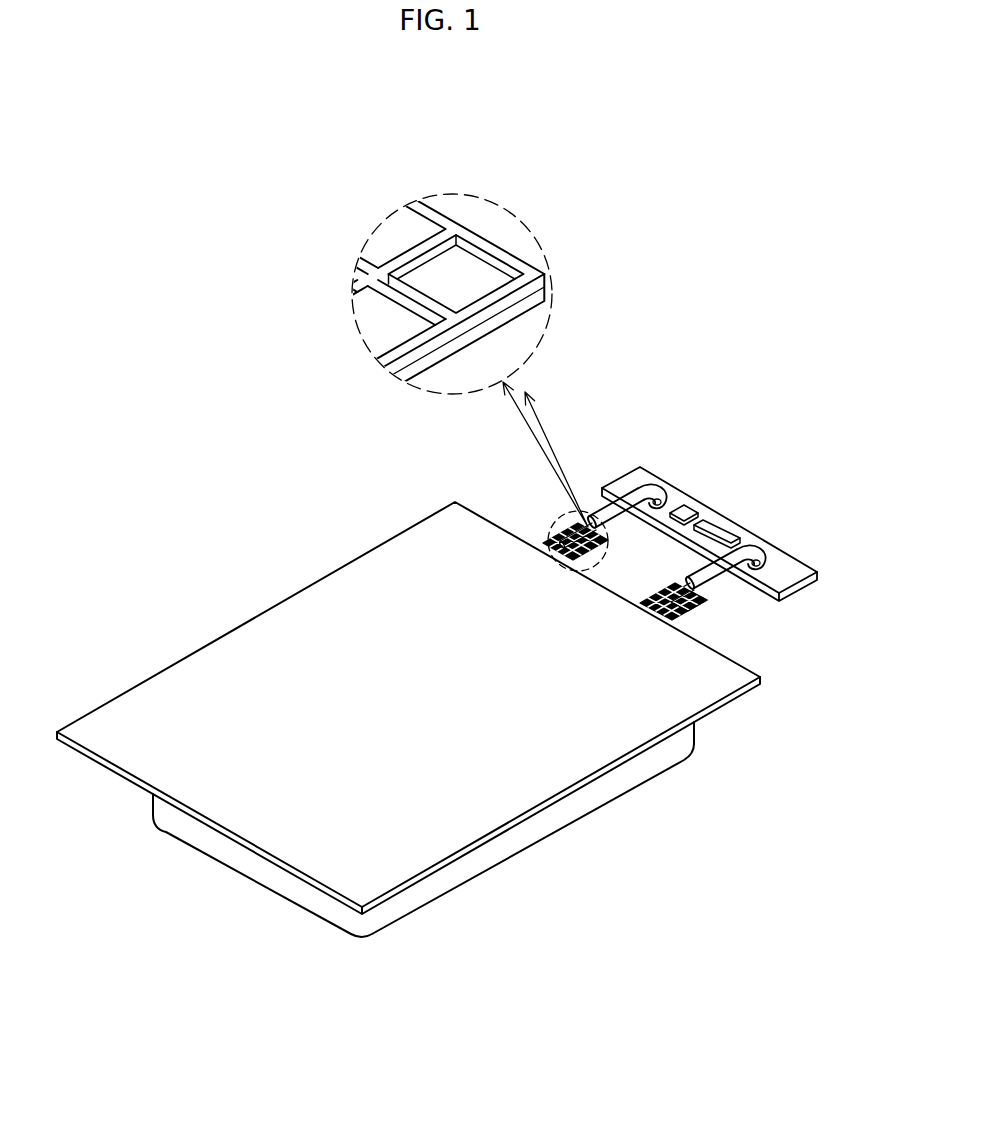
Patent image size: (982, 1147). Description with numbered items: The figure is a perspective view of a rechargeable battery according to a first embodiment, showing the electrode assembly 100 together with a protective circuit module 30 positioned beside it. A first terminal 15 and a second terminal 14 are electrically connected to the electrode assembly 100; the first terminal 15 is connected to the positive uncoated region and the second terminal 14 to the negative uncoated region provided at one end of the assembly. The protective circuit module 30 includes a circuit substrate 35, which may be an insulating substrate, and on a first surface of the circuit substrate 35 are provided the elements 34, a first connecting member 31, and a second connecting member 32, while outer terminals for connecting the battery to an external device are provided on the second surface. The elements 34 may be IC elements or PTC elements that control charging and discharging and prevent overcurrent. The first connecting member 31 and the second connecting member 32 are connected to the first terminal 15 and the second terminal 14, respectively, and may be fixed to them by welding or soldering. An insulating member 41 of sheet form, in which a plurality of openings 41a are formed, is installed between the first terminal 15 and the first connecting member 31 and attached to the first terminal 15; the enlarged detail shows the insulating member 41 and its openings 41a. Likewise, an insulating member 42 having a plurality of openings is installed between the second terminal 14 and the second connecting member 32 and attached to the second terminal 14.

The electrode assembly 100 is at (228, 619).
The second terminal 14 is at (677, 617).
The first terminal 15 is at (540, 537).
The protective circuit module 30 is at (740, 509).
The first connecting member 31 is at (615, 482).
The second connecting member 32 is at (723, 575).
The elements 34 is at (712, 525).
The circuit substrate 35 is at (673, 492).
The insulating member 41 is at (512, 260).
The openings 41a is at (470, 270).
The insulating member 42 is at (710, 598).